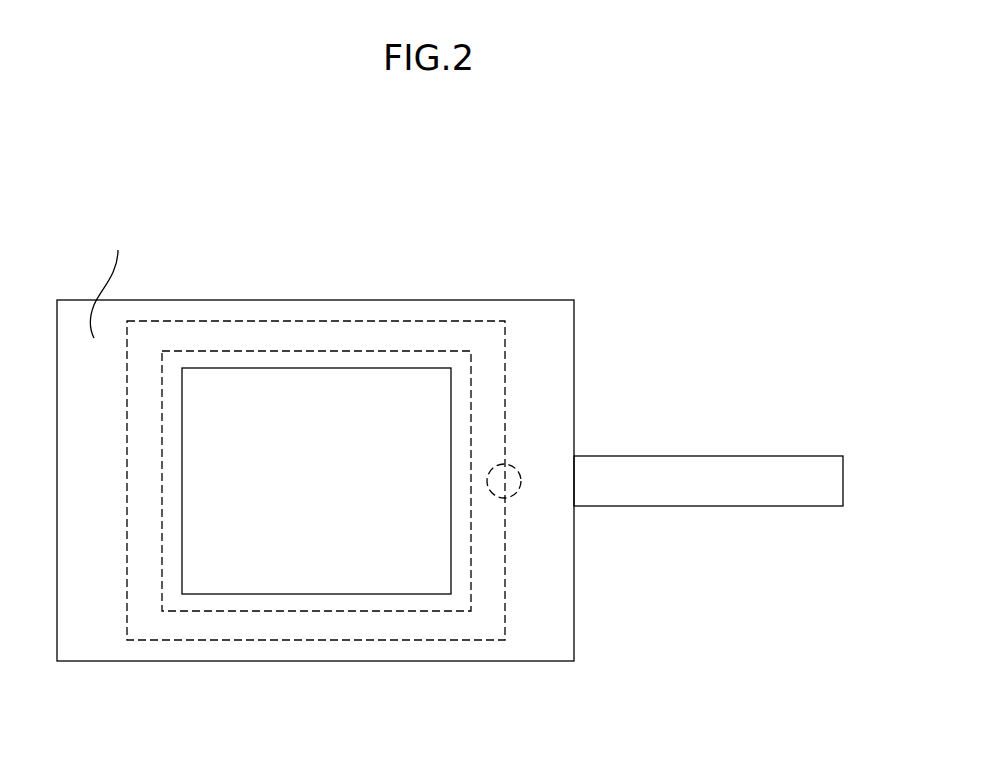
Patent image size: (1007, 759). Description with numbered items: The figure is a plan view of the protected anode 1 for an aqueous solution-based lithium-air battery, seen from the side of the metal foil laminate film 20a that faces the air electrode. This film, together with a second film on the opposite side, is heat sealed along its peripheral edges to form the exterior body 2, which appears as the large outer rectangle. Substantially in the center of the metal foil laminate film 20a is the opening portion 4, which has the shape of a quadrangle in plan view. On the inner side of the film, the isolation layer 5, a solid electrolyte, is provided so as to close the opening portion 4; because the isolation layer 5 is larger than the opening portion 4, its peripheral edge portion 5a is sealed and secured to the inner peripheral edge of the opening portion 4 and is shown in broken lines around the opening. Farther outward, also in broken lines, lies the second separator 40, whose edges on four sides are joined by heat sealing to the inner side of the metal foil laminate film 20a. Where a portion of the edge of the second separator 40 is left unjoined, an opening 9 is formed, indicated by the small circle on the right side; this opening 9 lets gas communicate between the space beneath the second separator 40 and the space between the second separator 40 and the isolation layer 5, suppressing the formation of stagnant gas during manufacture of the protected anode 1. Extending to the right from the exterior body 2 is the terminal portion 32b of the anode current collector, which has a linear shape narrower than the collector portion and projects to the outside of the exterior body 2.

The protected anode 1 is at (652, 192).
The exterior body 2 is at (576, 323).
The metal foil laminate film 20a is at (120, 277).
The terminal portion 32b is at (761, 456).
The second separator 40 is at (475, 322).
The peripheral edge portion 5a is at (462, 592).
The opening portion 4 is at (230, 586).
The isolation layer 5 is at (306, 440).
The opening 9 is at (513, 466).